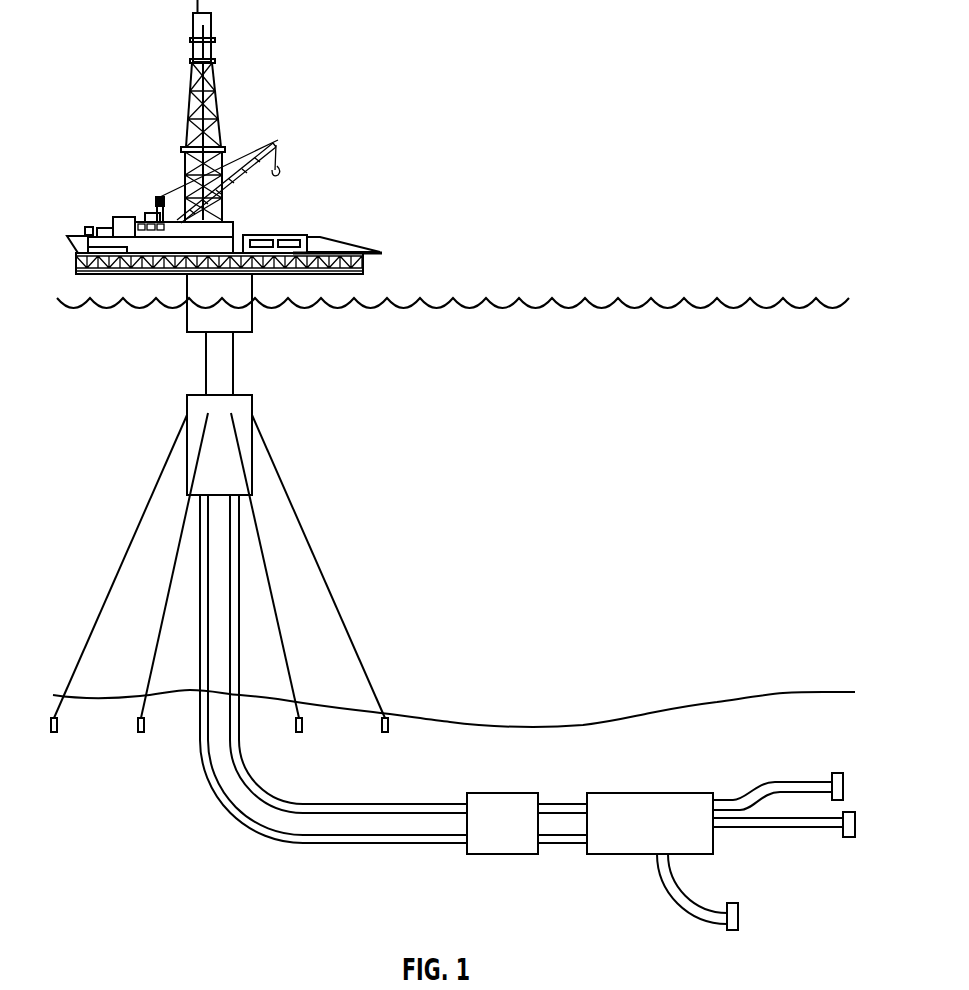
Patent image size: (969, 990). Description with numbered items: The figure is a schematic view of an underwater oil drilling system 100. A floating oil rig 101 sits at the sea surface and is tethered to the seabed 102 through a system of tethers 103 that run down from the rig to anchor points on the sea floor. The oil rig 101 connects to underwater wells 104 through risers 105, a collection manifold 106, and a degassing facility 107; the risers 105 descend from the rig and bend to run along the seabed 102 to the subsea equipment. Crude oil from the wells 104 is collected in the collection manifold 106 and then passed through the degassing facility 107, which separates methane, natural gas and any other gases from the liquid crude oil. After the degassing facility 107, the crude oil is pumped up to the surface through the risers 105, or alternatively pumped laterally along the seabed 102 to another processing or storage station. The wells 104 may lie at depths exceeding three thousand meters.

The underwater oil drilling system 100 is at (652, 50).
The floating oil rig 101 is at (280, 77).
The seabed 102 is at (163, 793).
The tethers 103 is at (177, 542).
The underwater wells 104 is at (837, 773).
The risers 105 is at (197, 668).
The collection manifold 106 is at (617, 855).
The degassing facility 107 is at (480, 855).